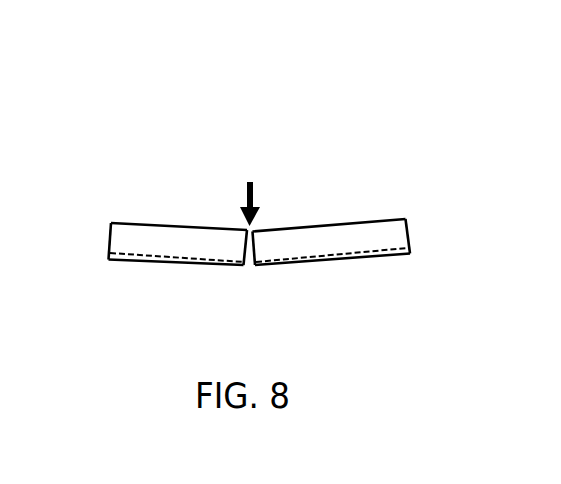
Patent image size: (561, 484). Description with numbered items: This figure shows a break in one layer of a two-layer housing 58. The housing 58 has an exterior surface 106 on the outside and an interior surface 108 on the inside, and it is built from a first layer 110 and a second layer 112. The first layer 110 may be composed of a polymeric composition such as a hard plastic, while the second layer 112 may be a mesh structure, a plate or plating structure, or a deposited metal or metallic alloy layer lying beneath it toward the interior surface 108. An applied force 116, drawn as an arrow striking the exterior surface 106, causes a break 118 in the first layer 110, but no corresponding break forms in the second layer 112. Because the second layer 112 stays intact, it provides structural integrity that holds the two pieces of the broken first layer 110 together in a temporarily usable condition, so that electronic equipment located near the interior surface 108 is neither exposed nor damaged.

The two-layer housing 58 is at (440, 86).
The exterior surface 106 is at (185, 228).
The interior surface 108 is at (222, 268).
The first layer 110 is at (125, 232).
The second layer 112 is at (160, 267).
The applied force 116 is at (250, 181).
The break 118 is at (248, 263).